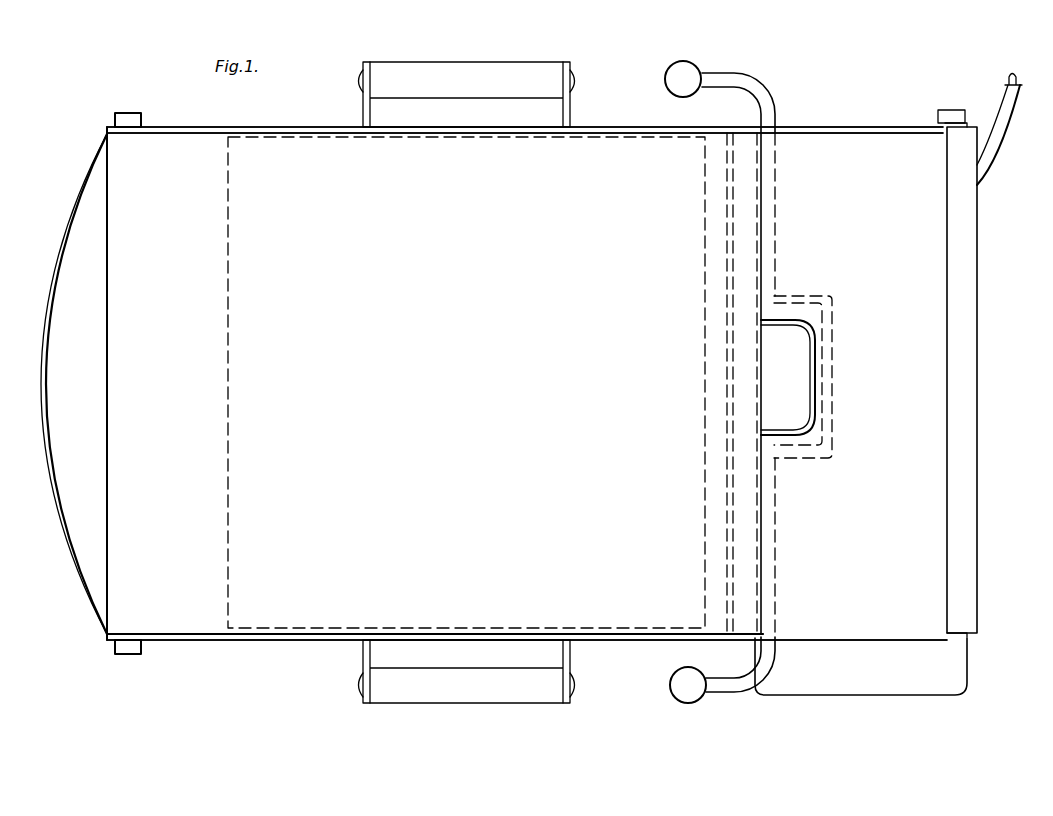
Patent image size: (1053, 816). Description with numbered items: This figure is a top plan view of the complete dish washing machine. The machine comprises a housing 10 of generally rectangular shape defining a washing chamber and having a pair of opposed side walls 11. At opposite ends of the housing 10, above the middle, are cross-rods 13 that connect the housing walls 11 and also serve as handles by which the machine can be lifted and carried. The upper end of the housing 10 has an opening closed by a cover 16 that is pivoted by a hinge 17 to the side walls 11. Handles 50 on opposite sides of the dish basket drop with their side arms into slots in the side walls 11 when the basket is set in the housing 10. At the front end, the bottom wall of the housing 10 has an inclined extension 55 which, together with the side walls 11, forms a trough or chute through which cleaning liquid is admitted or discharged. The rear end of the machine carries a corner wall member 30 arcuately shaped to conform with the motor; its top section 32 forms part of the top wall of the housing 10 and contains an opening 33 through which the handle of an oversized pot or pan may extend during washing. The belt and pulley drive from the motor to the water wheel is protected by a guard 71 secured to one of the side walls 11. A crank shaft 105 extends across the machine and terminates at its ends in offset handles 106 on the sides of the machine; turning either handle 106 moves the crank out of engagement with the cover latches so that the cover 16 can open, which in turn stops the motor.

The housing 10 is at (176, 643).
The side walls 11 is at (176, 129).
The cross-rods 13 is at (953, 493).
The cover 16 is at (318, 620).
The hinge 17 is at (116, 647).
The corner wall member 30 is at (868, 612).
The top section 32 is at (775, 527).
The opening 33 is at (793, 382).
The handles 50 is at (468, 66).
The inclined extension 55 is at (43, 378).
The guard 71 is at (912, 685).
The crank shaft 105 is at (770, 588).
The offset handles 106 is at (689, 71).